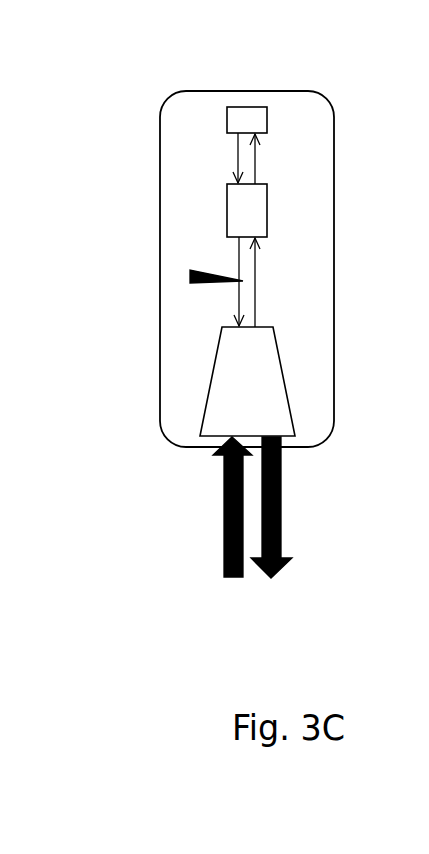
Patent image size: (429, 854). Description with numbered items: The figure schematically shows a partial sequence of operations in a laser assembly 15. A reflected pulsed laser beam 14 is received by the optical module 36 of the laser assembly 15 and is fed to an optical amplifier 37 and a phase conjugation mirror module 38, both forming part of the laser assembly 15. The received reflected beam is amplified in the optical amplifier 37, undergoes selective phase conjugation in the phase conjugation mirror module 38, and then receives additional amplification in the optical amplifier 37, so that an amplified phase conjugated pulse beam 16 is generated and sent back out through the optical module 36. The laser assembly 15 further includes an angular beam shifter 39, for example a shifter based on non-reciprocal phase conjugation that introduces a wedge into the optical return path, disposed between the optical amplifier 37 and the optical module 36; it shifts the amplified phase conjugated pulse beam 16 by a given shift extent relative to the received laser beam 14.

The laser assembly 15 is at (247, 91).
The phase conjugation mirror module 38 is at (267, 120).
The optical amplifier 37 is at (267, 208).
The angular beam shifter 39 is at (200, 284).
The optical module 36 is at (285, 380).
The amplified phase conjugated pulse beam 16 is at (224, 493).
The laser beam 14 is at (281, 500).